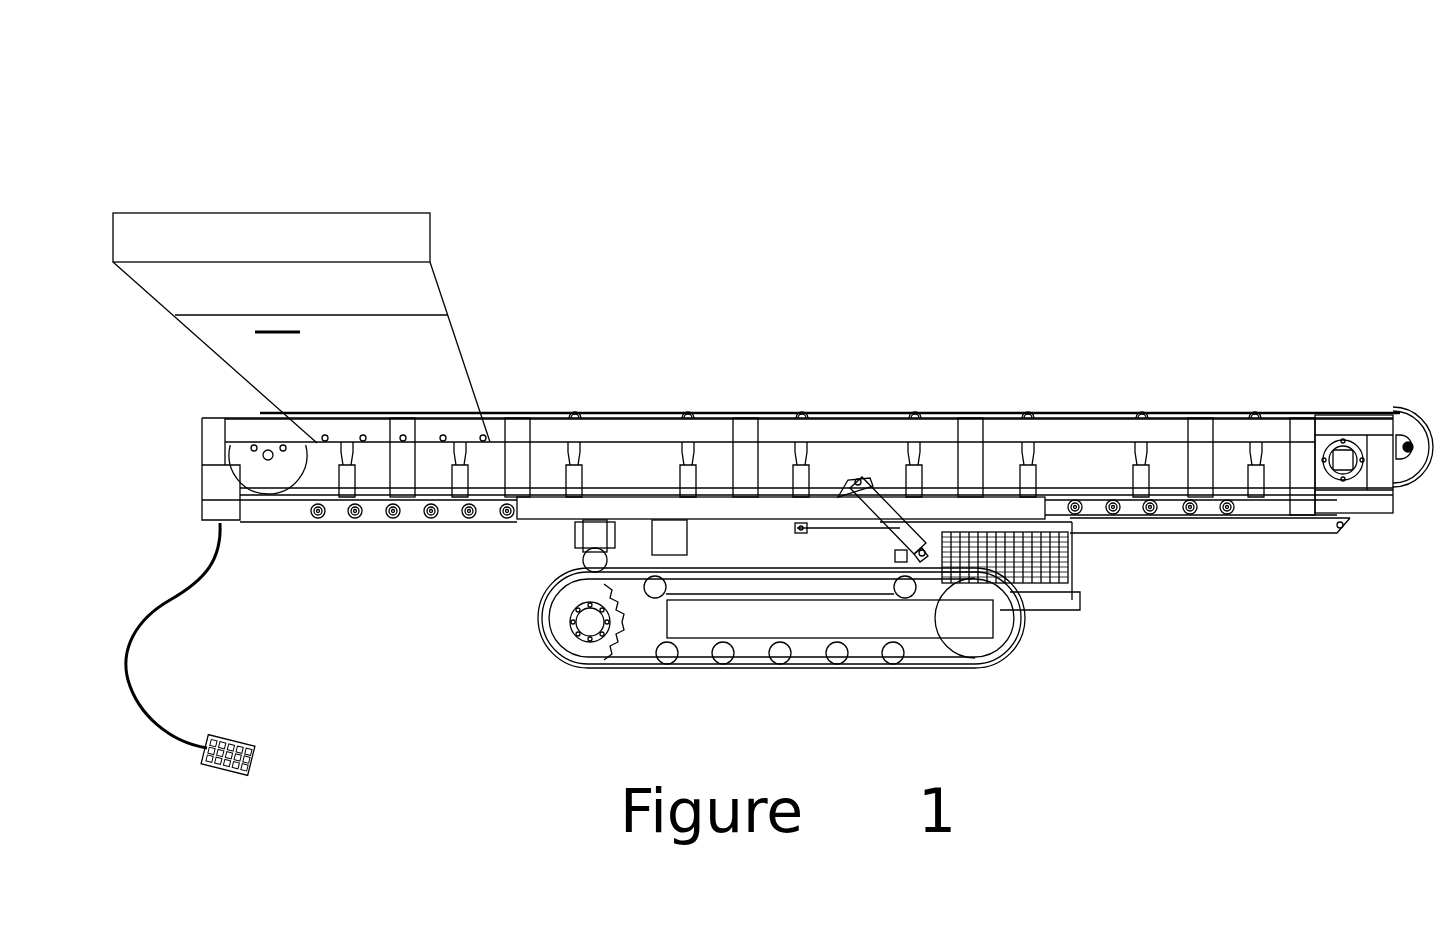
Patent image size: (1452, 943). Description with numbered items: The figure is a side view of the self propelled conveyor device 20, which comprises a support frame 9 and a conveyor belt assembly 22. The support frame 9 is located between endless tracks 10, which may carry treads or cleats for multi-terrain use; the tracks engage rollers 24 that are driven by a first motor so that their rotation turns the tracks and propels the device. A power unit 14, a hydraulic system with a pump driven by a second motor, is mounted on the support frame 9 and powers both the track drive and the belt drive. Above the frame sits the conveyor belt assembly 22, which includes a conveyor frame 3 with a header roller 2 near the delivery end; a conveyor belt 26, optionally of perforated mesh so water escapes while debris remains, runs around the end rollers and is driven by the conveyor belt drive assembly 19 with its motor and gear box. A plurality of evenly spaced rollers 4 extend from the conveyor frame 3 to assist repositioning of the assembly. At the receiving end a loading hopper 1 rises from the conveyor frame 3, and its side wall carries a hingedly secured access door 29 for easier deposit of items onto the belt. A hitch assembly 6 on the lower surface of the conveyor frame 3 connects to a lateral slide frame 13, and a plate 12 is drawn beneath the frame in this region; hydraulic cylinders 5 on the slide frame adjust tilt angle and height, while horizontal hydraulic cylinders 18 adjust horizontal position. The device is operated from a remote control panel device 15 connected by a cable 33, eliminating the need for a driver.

The loading hopper 1 is at (310, 205).
The access door 29 is at (200, 357).
The self propelled conveyor device 20 is at (1207, 353).
The conveyor frame 3 is at (742, 437).
The lateral slide frame 13 is at (625, 508).
The conveyor belt 26 is at (1068, 412).
The rollers 4 is at (353, 527).
The conveyor belt drive assembly 19 is at (1337, 432).
The header roller 2 is at (1408, 401).
The conveyor belt assembly 22 is at (1418, 500).
The horizontal hydraulic cylinders 18 is at (1255, 540).
The carriage plate 12 is at (693, 520).
The hitch assembly 6 is at (562, 548).
The hydraulic cylinders 5 is at (900, 505).
The power unit 14 is at (1087, 610).
The endless tracks 10 is at (557, 667).
The support frame 9 is at (875, 625).
The rollers 24 is at (592, 650).
The cable 33 is at (143, 718).
The remote control panel device 15 is at (237, 733).